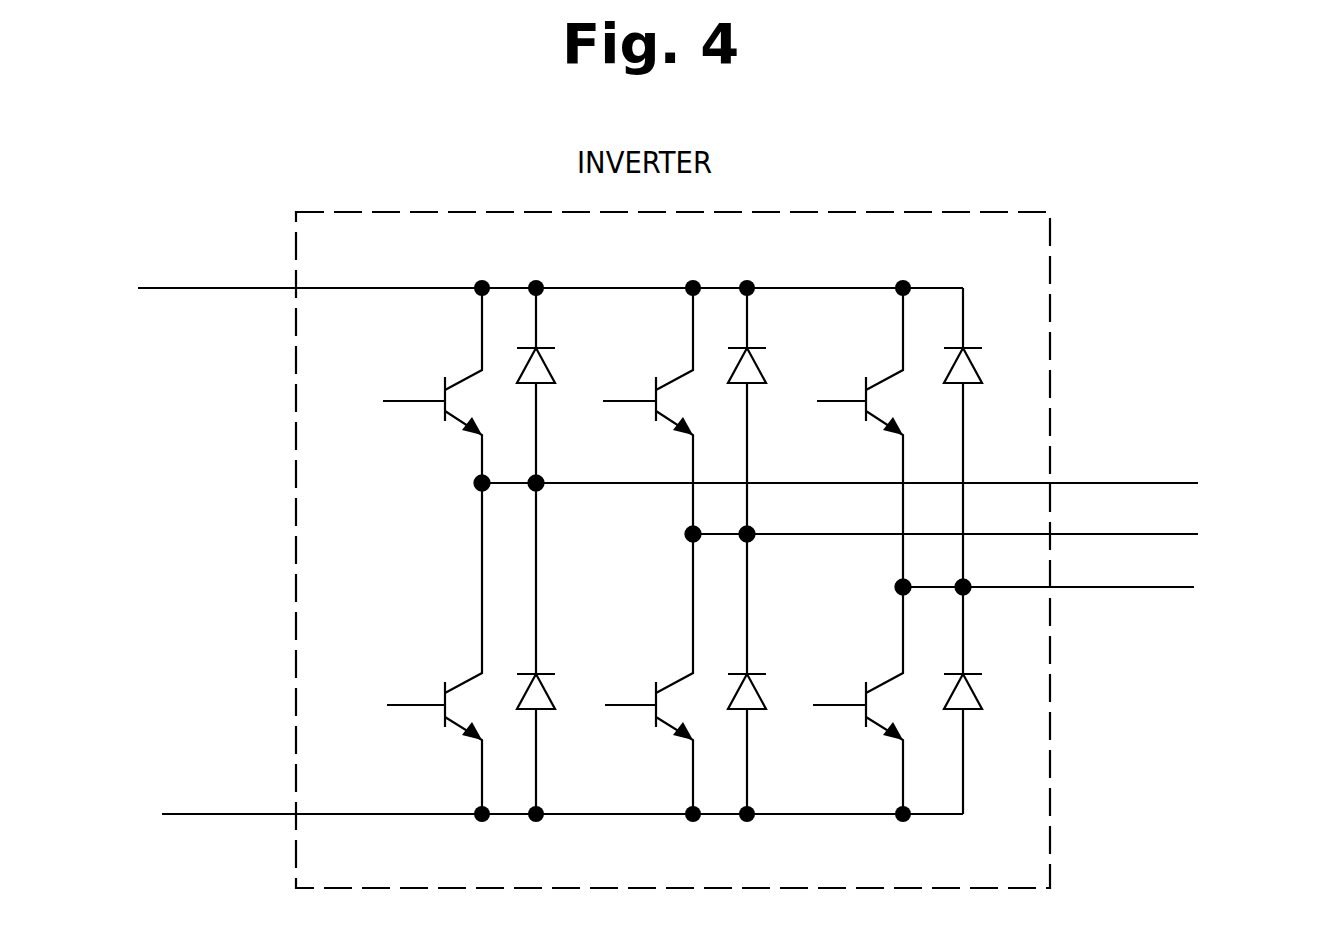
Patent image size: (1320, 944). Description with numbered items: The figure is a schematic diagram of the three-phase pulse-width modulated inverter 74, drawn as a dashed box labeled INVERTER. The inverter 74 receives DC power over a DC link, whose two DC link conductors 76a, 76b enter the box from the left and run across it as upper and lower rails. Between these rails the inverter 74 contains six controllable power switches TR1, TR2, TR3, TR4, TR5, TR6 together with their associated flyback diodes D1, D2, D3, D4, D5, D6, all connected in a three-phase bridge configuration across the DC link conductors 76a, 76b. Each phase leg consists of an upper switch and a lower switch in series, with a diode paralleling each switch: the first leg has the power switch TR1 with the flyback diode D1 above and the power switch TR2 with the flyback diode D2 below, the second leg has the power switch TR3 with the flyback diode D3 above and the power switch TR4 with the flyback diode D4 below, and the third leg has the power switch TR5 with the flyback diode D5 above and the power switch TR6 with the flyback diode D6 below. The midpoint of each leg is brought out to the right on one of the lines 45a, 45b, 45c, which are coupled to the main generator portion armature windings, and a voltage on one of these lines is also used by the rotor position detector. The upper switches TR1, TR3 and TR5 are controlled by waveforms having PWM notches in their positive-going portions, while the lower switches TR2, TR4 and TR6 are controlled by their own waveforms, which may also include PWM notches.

The three-phase pulse-width modulated inverter 74 is at (328, 192).
The DC link conductor 76a is at (240, 288).
The DC link conductor 76b is at (237, 814).
The line 45a is at (1178, 482).
The line 45b is at (1178, 533).
The line 45c is at (1174, 587).
The controllable power switch TR1 is at (440, 388).
The controllable power switch TR2 is at (442, 718).
The controllable power switch TR3 is at (652, 414).
The controllable power switch TR4 is at (652, 720).
The controllable power switch TR5 is at (862, 414).
The controllable power switch TR6 is at (858, 716).
The flyback diode D1 is at (555, 378).
The flyback diode D2 is at (555, 705).
The flyback diode D3 is at (766, 380).
The flyback diode D4 is at (768, 705).
The flyback diode D5 is at (982, 378).
The flyback diode D6 is at (982, 700).